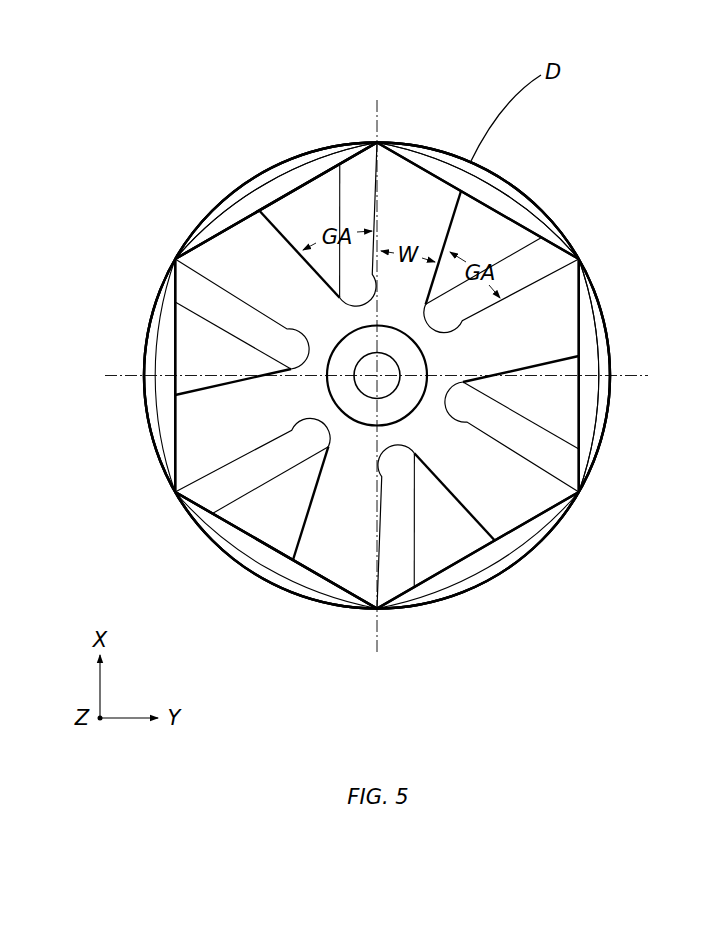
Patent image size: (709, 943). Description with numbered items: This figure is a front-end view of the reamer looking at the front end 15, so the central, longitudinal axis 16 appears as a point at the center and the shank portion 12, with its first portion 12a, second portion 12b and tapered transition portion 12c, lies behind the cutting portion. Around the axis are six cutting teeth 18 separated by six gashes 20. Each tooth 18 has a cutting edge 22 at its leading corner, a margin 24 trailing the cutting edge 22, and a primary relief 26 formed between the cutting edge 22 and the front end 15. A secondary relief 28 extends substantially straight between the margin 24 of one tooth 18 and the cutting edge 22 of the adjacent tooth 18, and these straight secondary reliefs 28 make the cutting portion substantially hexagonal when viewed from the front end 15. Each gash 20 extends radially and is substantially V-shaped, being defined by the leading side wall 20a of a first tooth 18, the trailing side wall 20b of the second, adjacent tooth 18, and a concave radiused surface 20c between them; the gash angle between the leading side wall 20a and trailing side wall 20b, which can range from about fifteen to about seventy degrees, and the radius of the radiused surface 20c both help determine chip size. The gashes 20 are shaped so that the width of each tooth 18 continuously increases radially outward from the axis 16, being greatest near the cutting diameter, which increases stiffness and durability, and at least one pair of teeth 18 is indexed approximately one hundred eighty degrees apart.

The shank portion 12 is at (175, 215).
The first portion 12a is at (200, 212).
The second portion 12b is at (225, 250).
The tapered transition portion 12c is at (255, 190).
The front end 15 is at (200, 505).
The central, longitudinal axis 16 is at (398, 366).
The cutting teeth 18 is at (440, 162).
The gash 20 is at (312, 200).
The leading side wall 20a is at (340, 162).
The trailing side wall 20b is at (273, 195).
The radiused surface 20c is at (360, 170).
The cutting edge 22 is at (377, 142).
The margin 24 is at (386, 145).
The primary relief 26 is at (395, 147).
The secondary relief 28 is at (207, 217).